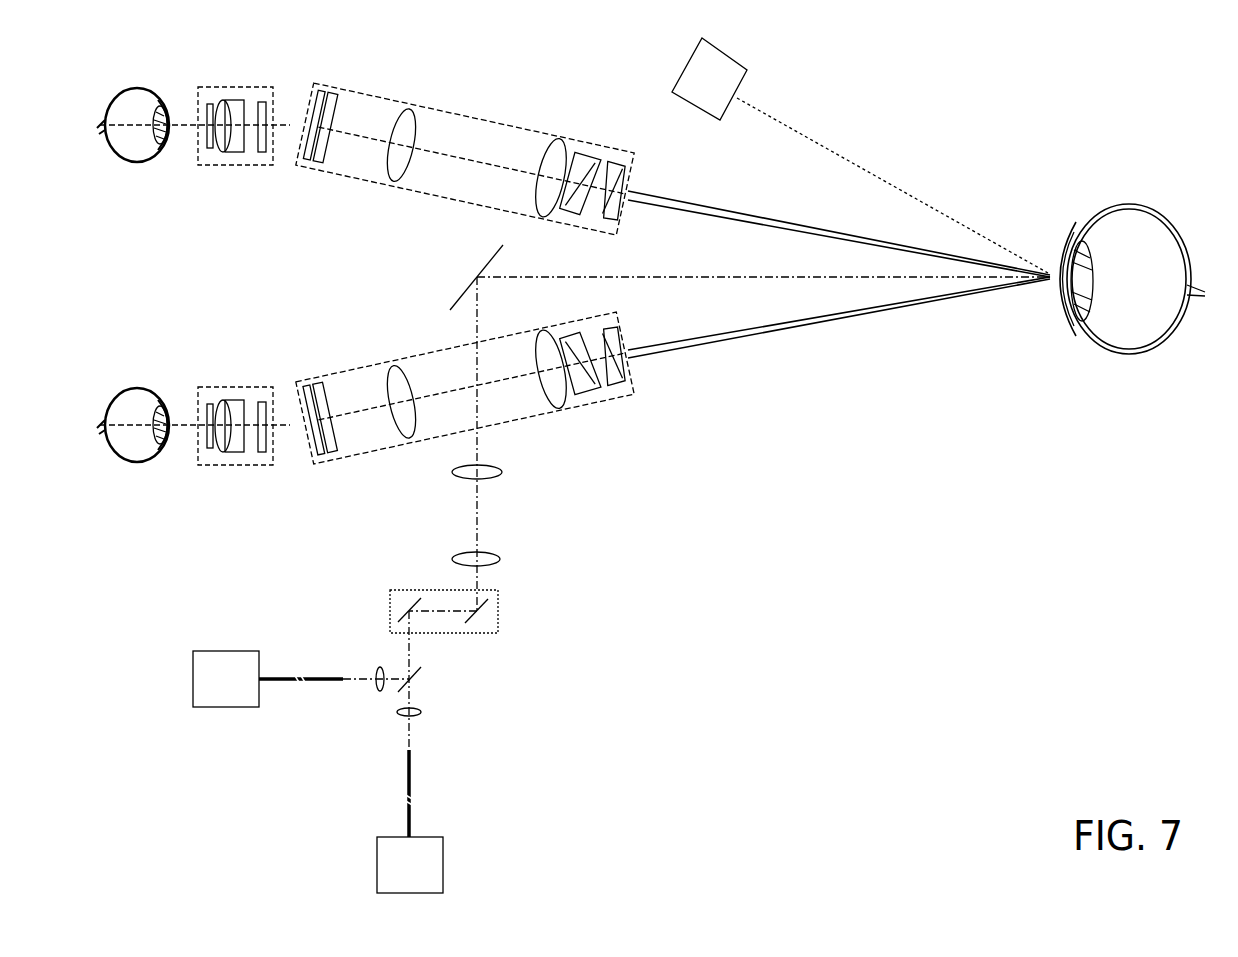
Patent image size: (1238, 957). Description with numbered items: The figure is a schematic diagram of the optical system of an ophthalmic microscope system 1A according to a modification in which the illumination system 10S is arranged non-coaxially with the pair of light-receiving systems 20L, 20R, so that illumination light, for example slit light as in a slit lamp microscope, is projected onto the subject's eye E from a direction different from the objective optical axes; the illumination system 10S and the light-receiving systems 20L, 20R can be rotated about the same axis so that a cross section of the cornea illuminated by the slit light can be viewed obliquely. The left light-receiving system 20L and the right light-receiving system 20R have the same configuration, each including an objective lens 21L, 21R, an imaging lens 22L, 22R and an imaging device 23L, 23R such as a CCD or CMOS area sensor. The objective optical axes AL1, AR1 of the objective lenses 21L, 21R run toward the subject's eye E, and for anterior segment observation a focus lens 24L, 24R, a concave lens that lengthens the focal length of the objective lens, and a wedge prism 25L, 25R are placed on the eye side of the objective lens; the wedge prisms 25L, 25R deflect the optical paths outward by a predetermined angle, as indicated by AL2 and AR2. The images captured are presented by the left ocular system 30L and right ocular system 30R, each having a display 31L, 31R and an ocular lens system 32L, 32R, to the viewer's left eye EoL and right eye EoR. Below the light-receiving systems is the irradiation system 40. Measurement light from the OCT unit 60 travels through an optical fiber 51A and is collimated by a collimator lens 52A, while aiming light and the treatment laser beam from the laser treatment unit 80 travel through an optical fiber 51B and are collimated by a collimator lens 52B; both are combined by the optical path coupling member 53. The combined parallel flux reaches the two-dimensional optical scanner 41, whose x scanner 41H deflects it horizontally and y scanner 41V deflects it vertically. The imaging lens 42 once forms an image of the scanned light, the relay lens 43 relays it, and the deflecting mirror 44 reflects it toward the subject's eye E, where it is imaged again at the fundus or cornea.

The ophthalmic microscope system 1A is at (1014, 106).
The subject's eye E is at (1147, 206).
The viewer's left eye EoL is at (152, 90).
The viewer's right eye EoR is at (152, 390).
The illumination system 10S is at (745, 68).
The left light-receiving system 20L is at (493, 120).
The right light-receiving system 20R is at (355, 375).
The objective lens 21L is at (557, 142).
The objective lens 21R is at (553, 340).
The imaging lens 22L is at (405, 108).
The imaging lens 22R is at (400, 372).
The imaging device 23L is at (318, 88).
The imaging device 23R is at (315, 388).
The focus lens 24L is at (582, 222).
The focus lens 24R is at (582, 400).
The wedge prism 25L is at (615, 165).
The wedge prism 25R is at (625, 332).
The left ocular system 30L is at (240, 87).
The right ocular system 30R is at (240, 387).
The display 31L is at (263, 165).
The display 31R is at (263, 465).
The ocular lens system 32L is at (222, 160).
The ocular lens system 32R is at (222, 463).
The objective optical axis AL1 is at (762, 208).
The deflected optical axis AL2 is at (826, 225).
The objective optical axis AR1 is at (832, 320).
The deflected optical axis AR2 is at (915, 312).
The irradiation system 40 is at (560, 532).
The optical scanner 41 is at (500, 600).
The x scanner 41H is at (396, 600).
The y scanner 41V is at (475, 630).
The imaging lens 42 is at (452, 558).
The relay lens 43 is at (502, 470).
The deflecting mirror 44 is at (480, 270).
The optical fiber 51A is at (412, 780).
The optical fiber 51B is at (300, 683).
The collimator lens 52A is at (420, 715).
The collimator lens 52B is at (380, 692).
The optical path coupling member 53 is at (422, 673).
The OCT unit 60 is at (443, 862).
The laser treatment unit 80 is at (232, 650).